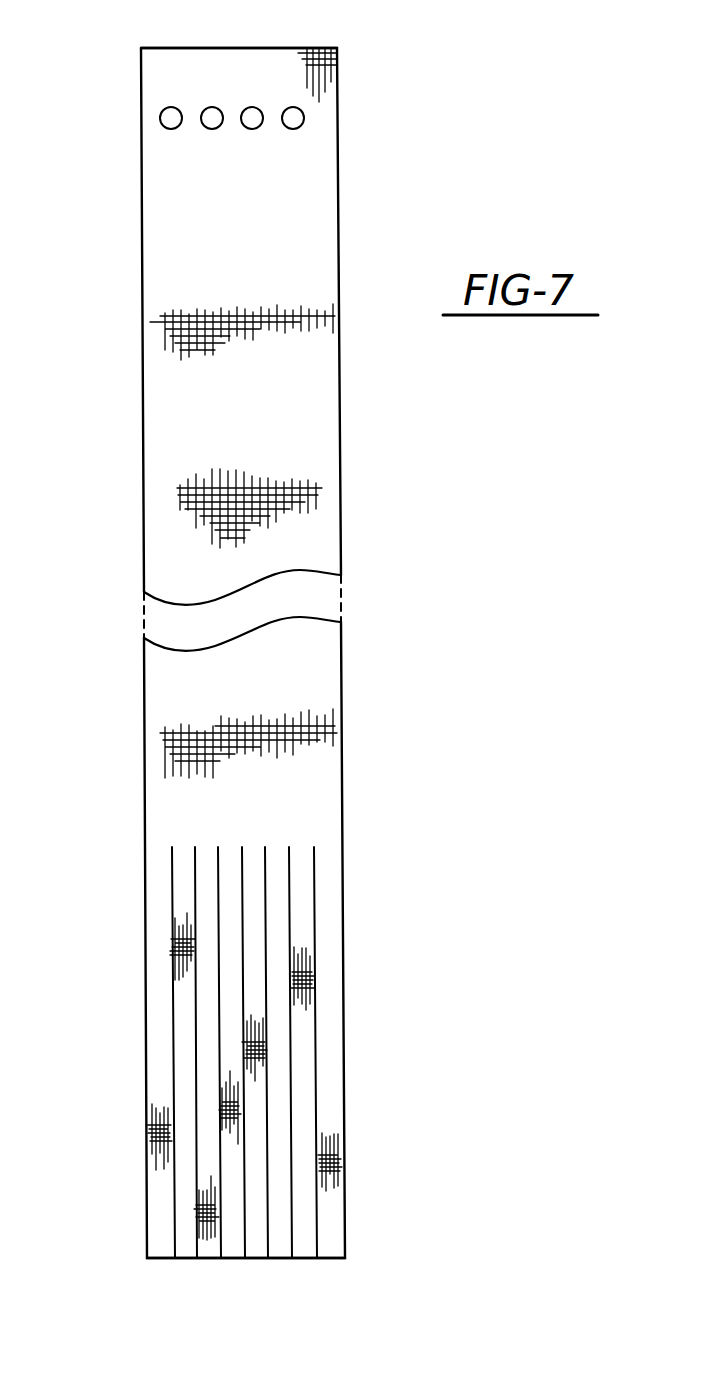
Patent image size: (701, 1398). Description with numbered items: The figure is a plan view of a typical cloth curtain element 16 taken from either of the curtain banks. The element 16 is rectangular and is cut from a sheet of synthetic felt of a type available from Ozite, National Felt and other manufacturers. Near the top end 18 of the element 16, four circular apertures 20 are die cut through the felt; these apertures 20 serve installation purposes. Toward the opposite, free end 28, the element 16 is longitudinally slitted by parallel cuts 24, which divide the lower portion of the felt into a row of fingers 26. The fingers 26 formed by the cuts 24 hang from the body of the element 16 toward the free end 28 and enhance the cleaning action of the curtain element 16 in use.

The cloth curtain element 16 is at (341, 737).
The top end 18 is at (173, 48).
The circular apertures 20 is at (292, 129).
The parallel cuts 24 is at (292, 1020).
The fingers 26 is at (205, 1005).
The free end 28 is at (235, 1258).